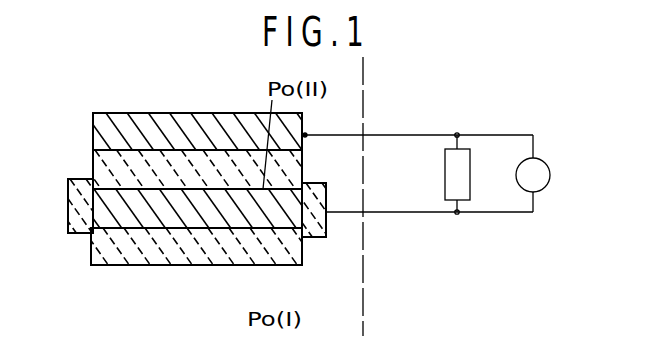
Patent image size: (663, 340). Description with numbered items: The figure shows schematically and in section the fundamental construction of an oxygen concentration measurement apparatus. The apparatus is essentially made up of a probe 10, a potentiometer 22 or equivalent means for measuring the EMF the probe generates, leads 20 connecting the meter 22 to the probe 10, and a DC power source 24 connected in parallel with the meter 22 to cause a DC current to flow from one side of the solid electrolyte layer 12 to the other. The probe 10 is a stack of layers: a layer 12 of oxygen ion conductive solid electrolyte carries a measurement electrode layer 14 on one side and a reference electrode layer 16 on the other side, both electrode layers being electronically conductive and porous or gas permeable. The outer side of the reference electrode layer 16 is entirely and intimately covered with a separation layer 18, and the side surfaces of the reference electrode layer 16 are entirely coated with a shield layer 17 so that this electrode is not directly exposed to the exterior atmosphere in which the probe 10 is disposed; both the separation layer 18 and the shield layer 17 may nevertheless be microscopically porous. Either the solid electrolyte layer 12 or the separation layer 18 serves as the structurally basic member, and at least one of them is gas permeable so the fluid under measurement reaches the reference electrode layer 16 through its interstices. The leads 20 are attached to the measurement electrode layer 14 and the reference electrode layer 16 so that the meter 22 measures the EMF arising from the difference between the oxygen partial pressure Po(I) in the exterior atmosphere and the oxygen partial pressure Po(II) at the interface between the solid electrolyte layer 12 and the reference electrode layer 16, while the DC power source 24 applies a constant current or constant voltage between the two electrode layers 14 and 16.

The probe 10 is at (305, 134).
The solid electrolyte layer 12 is at (100, 166).
The measurement electrode layer 14 is at (203, 128).
The reference electrode layer 16 is at (149, 219).
The shield layer 17 is at (70, 210).
The separation layer 18 is at (209, 253).
The leads 20 is at (408, 134).
The potentiometer 22 is at (550, 167).
The DC power source 24 is at (456, 175).